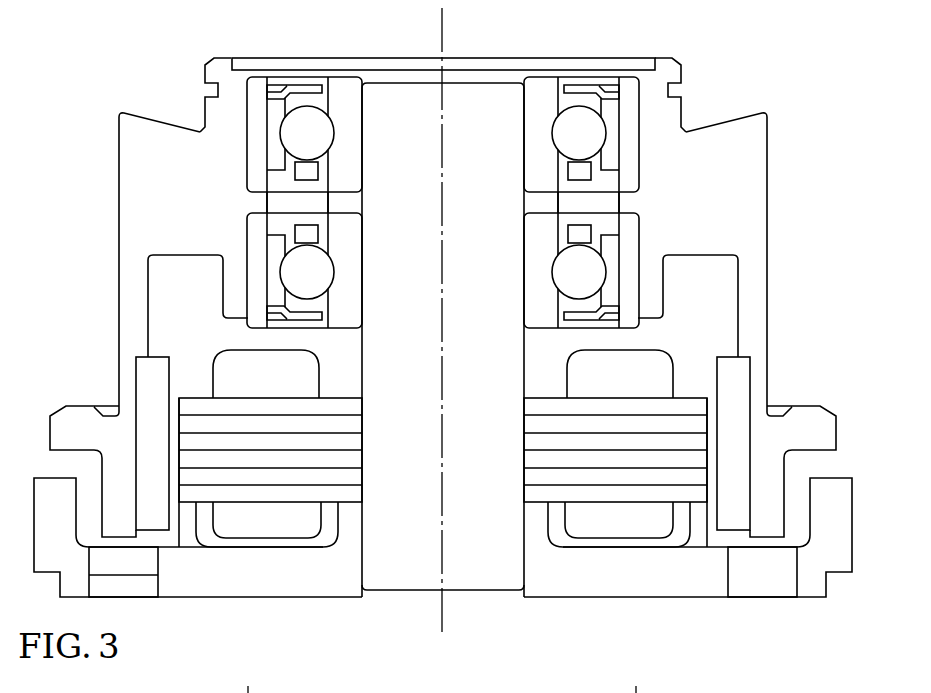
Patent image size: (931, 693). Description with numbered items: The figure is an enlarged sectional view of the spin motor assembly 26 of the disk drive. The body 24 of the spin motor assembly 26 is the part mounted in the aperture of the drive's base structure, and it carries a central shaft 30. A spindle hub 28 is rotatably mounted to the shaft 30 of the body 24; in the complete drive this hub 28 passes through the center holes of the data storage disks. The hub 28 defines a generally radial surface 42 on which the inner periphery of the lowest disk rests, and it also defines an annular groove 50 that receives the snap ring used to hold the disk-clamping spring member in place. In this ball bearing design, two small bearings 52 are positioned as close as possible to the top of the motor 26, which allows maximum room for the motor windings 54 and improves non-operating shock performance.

The body 24 is at (209, 575).
The spin motor assembly 26 is at (549, 31).
The spindle hub 28 is at (123, 197).
The shaft 30 is at (433, 253).
The radial surface 42 is at (78, 405).
The annular groove 50 is at (210, 88).
The bearings 52 is at (622, 133).
The motor windings 54 is at (602, 525).